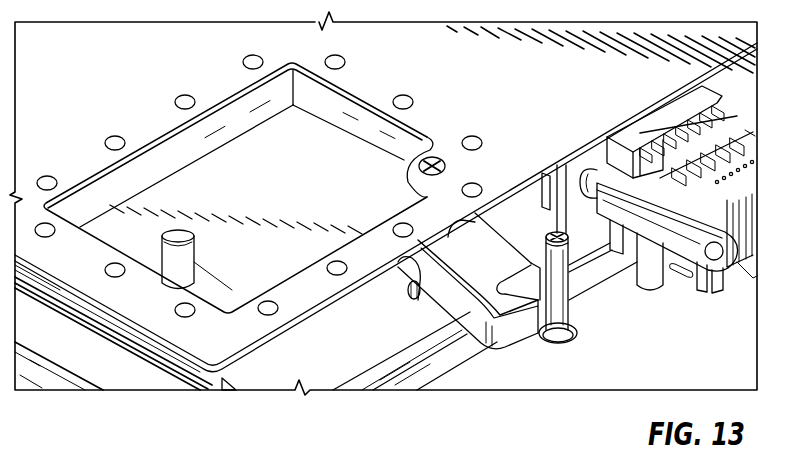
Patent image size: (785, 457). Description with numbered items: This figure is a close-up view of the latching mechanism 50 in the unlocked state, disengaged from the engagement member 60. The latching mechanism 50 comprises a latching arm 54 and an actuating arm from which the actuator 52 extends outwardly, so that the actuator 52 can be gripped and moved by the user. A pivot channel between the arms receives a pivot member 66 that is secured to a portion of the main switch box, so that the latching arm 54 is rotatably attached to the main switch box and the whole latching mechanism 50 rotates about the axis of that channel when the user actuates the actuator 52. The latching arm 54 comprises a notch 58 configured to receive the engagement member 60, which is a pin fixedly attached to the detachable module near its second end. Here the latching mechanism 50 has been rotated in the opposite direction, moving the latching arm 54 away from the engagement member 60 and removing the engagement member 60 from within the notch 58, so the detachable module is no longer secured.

The latching mechanism 50 is at (333, 161).
The actuator 52 is at (182, 236).
The latching arm 54 is at (452, 275).
The notch 58 is at (523, 287).
The engagement member 60 is at (557, 283).
The pivot member 66 is at (467, 268).